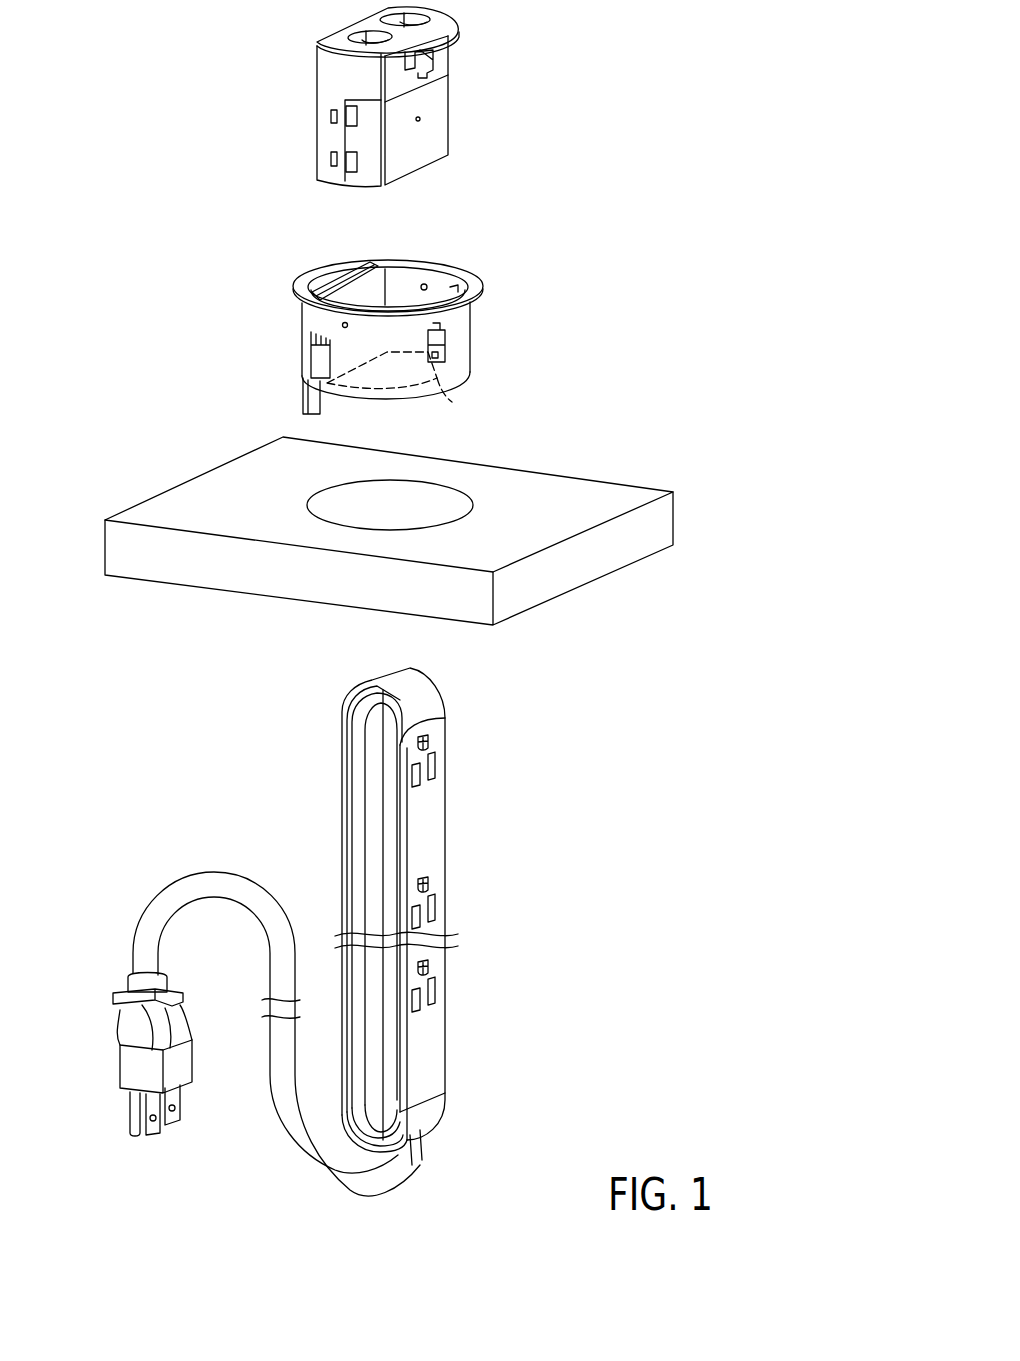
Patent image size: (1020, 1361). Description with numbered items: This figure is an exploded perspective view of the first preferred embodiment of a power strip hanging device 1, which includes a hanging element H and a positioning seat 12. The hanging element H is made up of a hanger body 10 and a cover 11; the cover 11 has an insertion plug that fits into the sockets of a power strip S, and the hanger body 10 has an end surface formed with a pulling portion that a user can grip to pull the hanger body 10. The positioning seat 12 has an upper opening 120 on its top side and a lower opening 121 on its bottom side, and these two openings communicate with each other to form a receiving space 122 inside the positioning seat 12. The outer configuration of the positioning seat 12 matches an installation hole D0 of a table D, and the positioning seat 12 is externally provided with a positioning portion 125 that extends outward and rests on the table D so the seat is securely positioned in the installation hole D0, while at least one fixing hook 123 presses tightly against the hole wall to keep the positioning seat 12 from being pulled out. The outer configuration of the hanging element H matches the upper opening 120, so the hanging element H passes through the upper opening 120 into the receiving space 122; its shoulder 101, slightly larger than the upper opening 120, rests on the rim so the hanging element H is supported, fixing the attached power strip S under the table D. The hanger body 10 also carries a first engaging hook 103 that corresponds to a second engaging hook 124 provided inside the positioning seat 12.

The power strip hanging device 1 is at (648, 90).
The hanger body 10 is at (360, 97).
The shoulder 101 is at (318, 46).
The first engaging hook 103 is at (425, 62).
The cover 11 is at (440, 128).
The hanging element H is at (288, 145).
The positioning seat 12 is at (407, 322).
The upper opening 120 is at (449, 274).
The lower opening 121 is at (452, 412).
The receiving space 122 is at (407, 292).
The fixing hook 123 is at (320, 363).
The second engaging hook 124 is at (448, 334).
The positioning portion 125 is at (479, 292).
The table D is at (389, 525).
The installation hole D0 is at (453, 498).
The power strip S is at (430, 830).